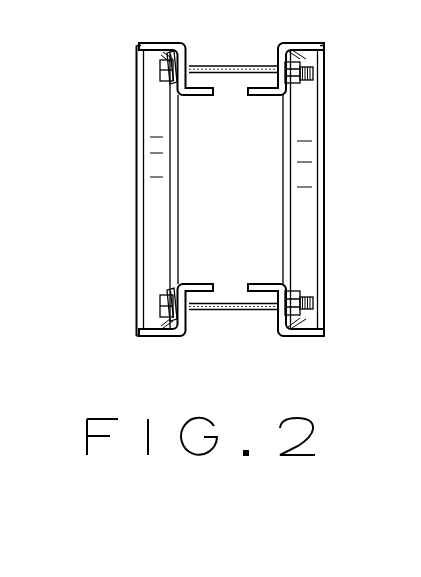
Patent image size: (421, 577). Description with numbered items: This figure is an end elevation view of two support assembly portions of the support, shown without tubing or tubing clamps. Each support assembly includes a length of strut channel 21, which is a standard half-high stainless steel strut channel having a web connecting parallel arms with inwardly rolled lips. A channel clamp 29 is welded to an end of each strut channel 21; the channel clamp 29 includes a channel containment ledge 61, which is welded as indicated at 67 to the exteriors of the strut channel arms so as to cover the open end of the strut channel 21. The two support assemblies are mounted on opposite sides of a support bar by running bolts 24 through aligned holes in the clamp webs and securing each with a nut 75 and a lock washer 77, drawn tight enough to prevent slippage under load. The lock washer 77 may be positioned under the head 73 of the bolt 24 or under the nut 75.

The strut channel 21 is at (312, 127).
The bolt 24 is at (221, 303).
The channel clamp 29 is at (268, 53).
The channel containment ledge 61 is at (160, 338).
The weld 67 is at (284, 289).
The bolt head 73 is at (160, 302).
The nut 75 is at (300, 298).
The lock washer 77 is at (170, 291).